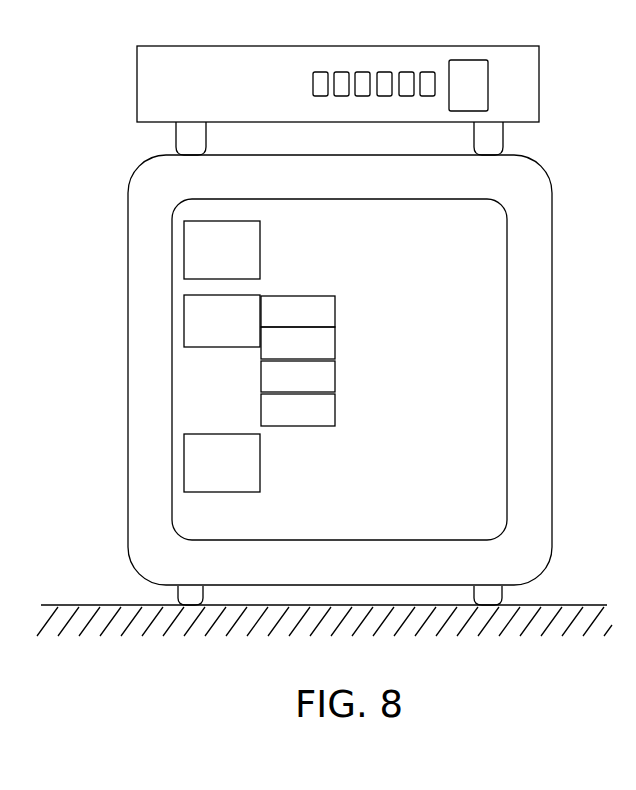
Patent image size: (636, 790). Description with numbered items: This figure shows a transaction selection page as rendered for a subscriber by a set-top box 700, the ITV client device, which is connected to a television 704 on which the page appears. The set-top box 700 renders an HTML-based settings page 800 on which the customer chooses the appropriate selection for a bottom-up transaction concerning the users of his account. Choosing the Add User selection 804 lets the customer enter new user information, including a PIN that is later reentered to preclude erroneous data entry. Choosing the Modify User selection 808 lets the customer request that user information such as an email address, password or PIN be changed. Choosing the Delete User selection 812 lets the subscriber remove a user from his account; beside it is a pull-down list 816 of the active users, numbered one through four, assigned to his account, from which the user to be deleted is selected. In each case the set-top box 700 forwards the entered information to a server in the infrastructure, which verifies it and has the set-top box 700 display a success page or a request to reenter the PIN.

The set-top box 700 is at (539, 82).
The television 704 is at (552, 343).
The settings page 800 is at (483, 466).
The Add User selection 804 is at (184, 250).
The Delete User selection 812 is at (184, 327).
The pull-down list 816 is at (335, 348).
The Modify User selection 808 is at (184, 476).